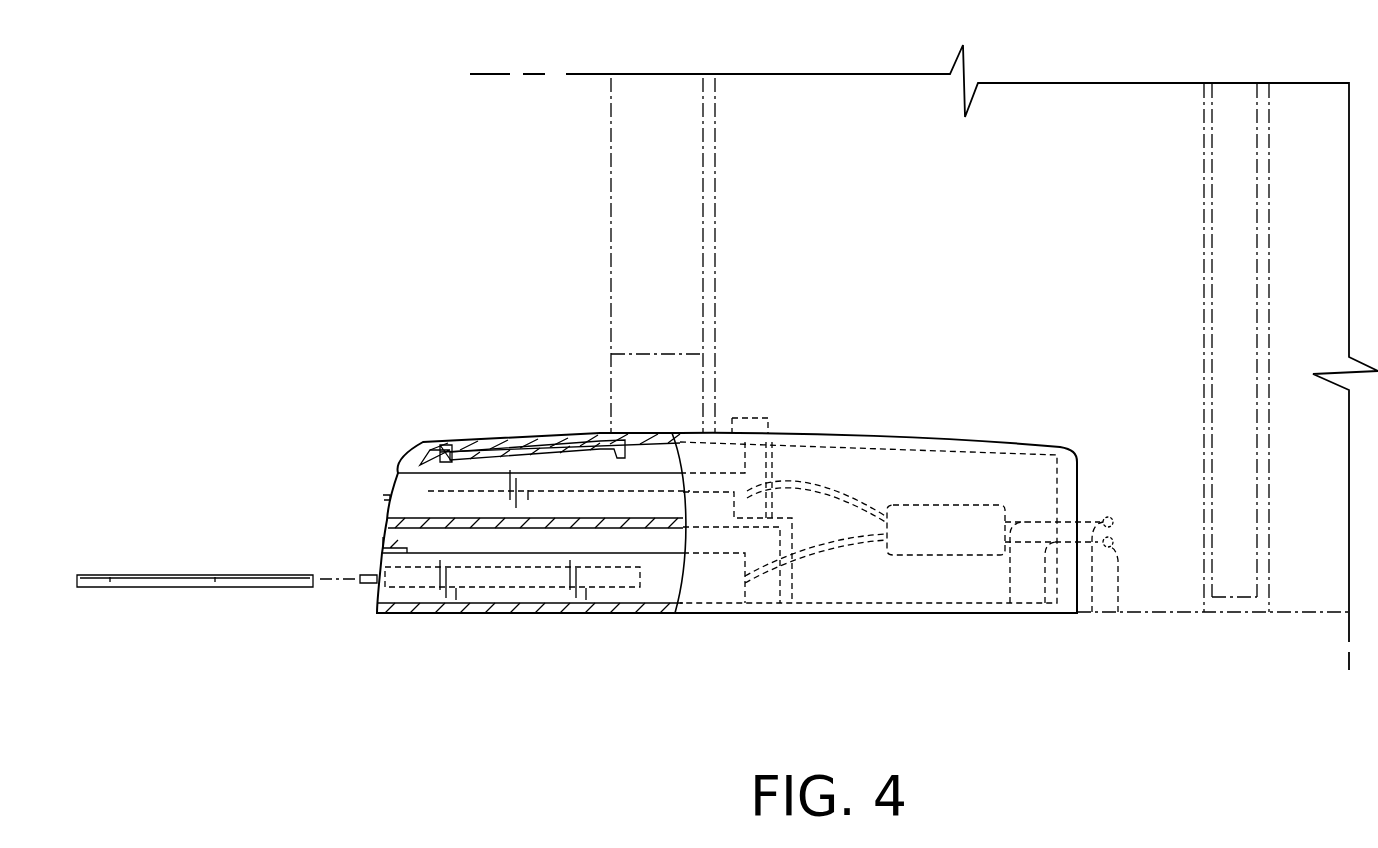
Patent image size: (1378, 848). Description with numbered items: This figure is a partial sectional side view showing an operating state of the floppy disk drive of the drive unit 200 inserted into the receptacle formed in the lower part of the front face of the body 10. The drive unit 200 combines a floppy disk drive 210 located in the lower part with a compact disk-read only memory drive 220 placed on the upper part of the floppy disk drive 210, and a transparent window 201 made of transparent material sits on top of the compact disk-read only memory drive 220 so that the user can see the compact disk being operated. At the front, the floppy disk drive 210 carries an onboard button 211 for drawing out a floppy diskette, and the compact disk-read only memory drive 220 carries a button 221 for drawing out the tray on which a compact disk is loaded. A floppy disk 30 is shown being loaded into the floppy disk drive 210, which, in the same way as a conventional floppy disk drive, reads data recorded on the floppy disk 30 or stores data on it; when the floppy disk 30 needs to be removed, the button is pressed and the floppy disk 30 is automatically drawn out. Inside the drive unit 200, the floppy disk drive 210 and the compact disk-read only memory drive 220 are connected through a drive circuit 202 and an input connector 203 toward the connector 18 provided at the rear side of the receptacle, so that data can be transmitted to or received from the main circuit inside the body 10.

The body 10 is at (797, 143).
The floppy disk 30 is at (180, 583).
The drive unit 200 is at (387, 540).
The transparent window 201 is at (520, 440).
The compact disk-read only memory drive 220 is at (477, 505).
The button 221 is at (386, 498).
The floppy disk drive 210 is at (475, 580).
The onboard button 211 is at (360, 581).
The drive circuit 202 is at (900, 538).
The input connector 203 is at (1010, 612).
The connector 18 is at (1133, 630).